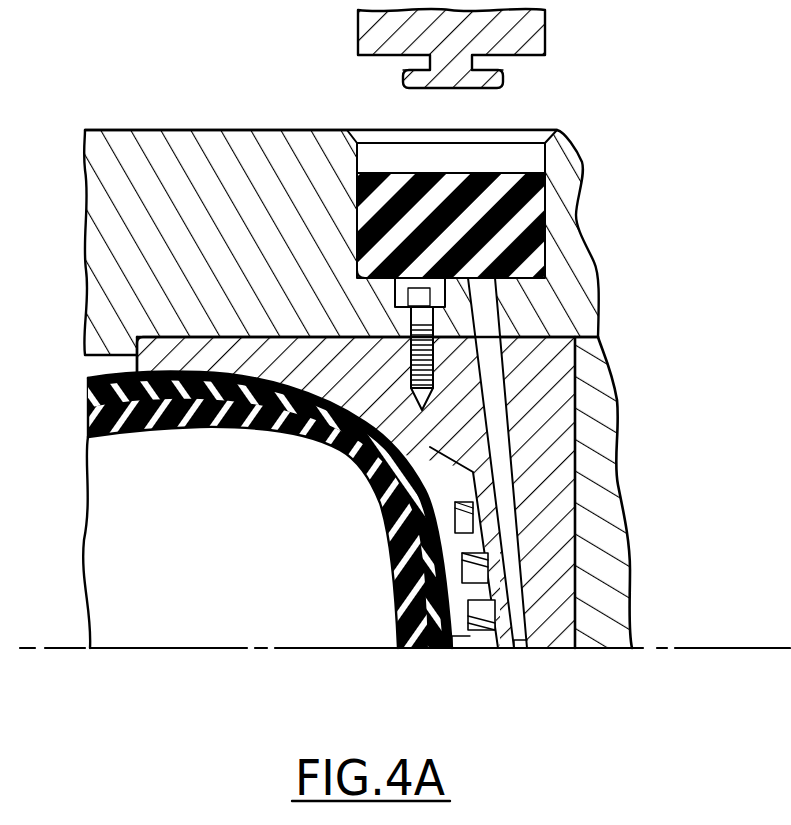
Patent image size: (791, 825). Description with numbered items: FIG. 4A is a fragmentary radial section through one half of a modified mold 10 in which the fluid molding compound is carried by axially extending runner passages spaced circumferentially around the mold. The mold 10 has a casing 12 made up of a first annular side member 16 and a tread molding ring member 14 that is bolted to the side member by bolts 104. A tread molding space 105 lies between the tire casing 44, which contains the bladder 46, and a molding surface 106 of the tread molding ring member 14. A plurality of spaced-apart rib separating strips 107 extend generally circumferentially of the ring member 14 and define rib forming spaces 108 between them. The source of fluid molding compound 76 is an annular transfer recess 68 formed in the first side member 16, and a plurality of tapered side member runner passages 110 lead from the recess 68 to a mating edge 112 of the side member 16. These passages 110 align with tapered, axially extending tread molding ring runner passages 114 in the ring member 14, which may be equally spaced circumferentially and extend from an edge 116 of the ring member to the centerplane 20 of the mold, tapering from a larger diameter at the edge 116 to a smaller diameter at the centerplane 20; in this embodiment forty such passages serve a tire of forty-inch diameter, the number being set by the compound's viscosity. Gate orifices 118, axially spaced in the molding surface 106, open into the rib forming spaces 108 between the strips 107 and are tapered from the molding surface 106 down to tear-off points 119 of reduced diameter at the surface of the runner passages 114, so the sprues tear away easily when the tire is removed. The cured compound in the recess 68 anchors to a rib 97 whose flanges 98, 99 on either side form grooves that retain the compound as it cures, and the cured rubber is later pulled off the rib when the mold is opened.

The mold 10 is at (633, 70).
The casing 12 is at (598, 374).
The tread molding ring member 14 is at (565, 418).
The first annular side member 16 is at (158, 147).
The centerplane 20 is at (30, 652).
The tire casing 44 is at (307, 414).
The bladder 46 is at (243, 427).
The annular transfer recess 68 is at (390, 143).
The fluid molding compound 76 is at (487, 174).
The rib 97 is at (463, 78).
The flange 98 is at (403, 70).
The flange 99 is at (473, 72).
The bolt 104 is at (483, 293).
The tread molding space 105 is at (437, 648).
The molding surface 106 is at (484, 648).
The rib separating strip 107 is at (383, 517).
The rib forming space 108 is at (363, 494).
The side member runner passage 110 is at (485, 322).
The mating edge 112 is at (150, 358).
The tread molding ring runner passage 114 is at (577, 642).
The edge 116 is at (167, 336).
The gate orifice 118 is at (448, 487).
The tear-off point 119 is at (450, 460).